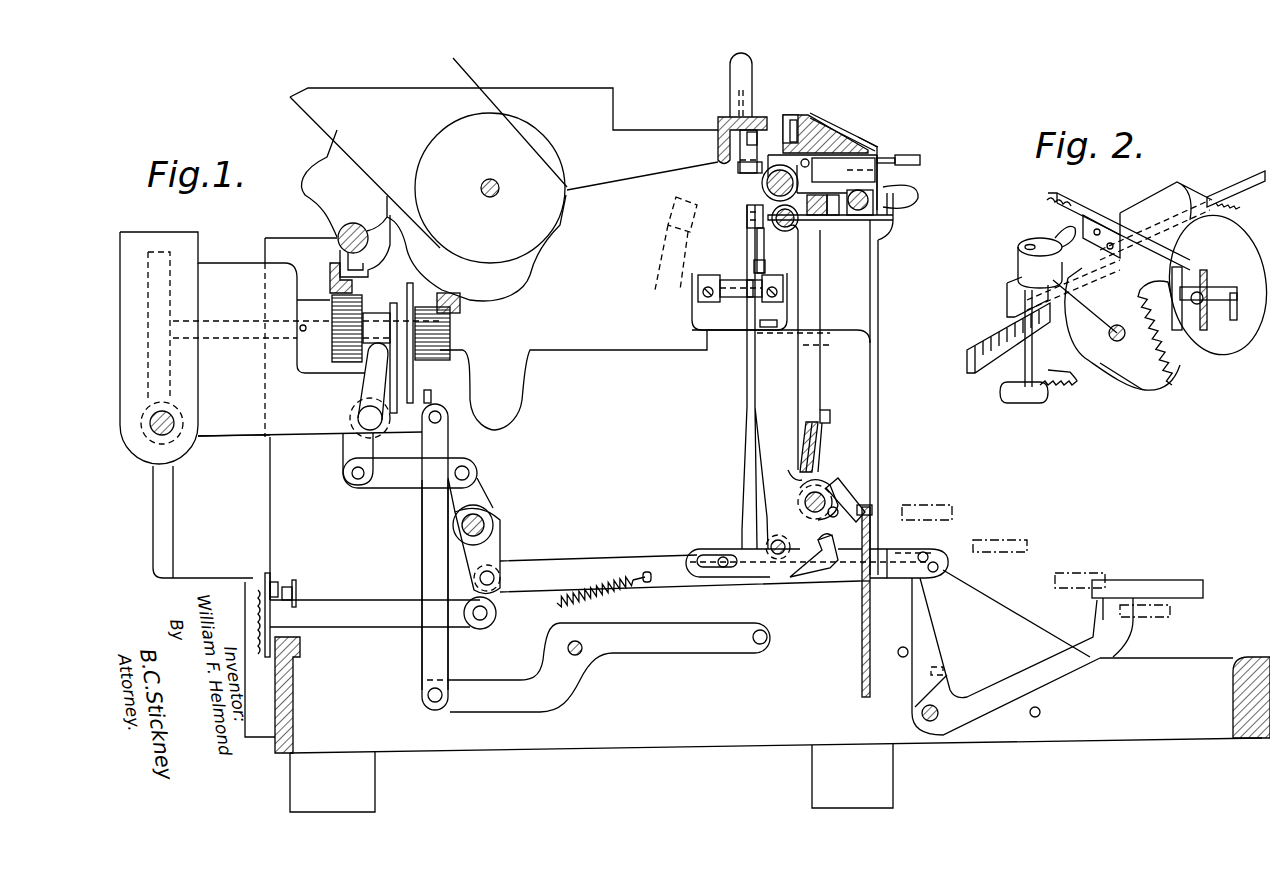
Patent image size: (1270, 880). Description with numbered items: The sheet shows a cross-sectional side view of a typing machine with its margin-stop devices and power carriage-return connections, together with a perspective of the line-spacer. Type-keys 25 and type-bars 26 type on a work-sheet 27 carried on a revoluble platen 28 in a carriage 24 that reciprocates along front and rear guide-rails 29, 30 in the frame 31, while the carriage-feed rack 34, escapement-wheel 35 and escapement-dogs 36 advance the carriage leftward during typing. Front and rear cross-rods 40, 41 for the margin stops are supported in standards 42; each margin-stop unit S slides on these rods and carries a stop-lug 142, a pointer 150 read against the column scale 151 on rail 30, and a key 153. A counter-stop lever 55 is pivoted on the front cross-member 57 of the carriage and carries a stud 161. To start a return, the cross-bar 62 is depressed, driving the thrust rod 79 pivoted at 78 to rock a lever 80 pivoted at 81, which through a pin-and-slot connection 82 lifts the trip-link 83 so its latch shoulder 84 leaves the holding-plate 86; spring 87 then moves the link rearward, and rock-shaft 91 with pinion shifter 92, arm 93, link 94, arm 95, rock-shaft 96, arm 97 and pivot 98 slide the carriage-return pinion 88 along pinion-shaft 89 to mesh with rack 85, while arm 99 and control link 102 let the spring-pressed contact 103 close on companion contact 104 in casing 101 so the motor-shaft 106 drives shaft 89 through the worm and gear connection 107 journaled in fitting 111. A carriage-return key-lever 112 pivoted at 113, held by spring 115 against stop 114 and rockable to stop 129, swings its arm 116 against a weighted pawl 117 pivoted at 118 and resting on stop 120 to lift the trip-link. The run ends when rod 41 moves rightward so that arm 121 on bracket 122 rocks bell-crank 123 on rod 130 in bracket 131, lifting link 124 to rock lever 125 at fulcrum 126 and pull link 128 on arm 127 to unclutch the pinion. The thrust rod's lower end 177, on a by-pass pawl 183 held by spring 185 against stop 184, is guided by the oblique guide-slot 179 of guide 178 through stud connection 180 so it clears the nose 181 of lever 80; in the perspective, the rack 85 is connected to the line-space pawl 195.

In FIG. 1, the carriage 24 is at (620, 182).
In FIG. 2, the carriage 24 is at (1133, 378).
In FIG. 1, the type-keys 25 is at (955, 512).
In FIG. 1, the type-bars 26 is at (665, 235).
In FIG. 1, the work-sheet 27 is at (483, 94).
In FIG. 1, the platen 28 is at (448, 135).
In FIG. 2, the platen 28 is at (1242, 340).
In FIG. 1, the front guide-rail 29 is at (805, 115).
In FIG. 1, the rear guide-rail 30 is at (353, 223).
In FIG. 1, the frame 31 is at (625, 350).
In FIG. 1, the carriage-feed rack 34 is at (460, 315).
In FIG. 1, the escapement-wheel 35 is at (407, 292).
In FIG. 1, the escapement-dogs 36 is at (431, 395).
In FIG. 1, the front cross-rod 40 is at (885, 222).
In FIG. 1, the rear cross-rod 41 is at (765, 178).
In FIG. 1, the standards 42 is at (879, 287).
In FIG. 1, the counter-stop lever 55 is at (740, 170).
In FIG. 1, the front cross-member 57 is at (722, 118).
In FIG. 1, the cross-bar 62 is at (820, 216).
In FIG. 1, the pivot 78 is at (792, 230).
In FIG. 1, the thrust rod 79 is at (821, 287).
In FIG. 1, the lever 80 is at (735, 553).
In FIG. 1, the pivot 81 is at (772, 542).
In FIG. 1, the pin-and-slot connection 82 is at (718, 575).
In FIG. 1, the carriage-return trip-link 83 is at (802, 583).
In FIG. 1, the latch shoulder 84 is at (873, 585).
In FIG. 1, the carriage rack 85 is at (330, 270).
In FIG. 2, the carriage rack 85 is at (978, 345).
In FIG. 1, the holding-plate 86 is at (862, 632).
In FIG. 1, the spring 87 is at (600, 592).
In FIG. 1, the carriage-return pinion 88 is at (340, 365).
In FIG. 1, the pinion-shaft 89 is at (265, 345).
In FIG. 1, the rock-shaft 91 is at (358, 418).
In FIG. 1, the pinion shifter 92 is at (364, 386).
In FIG. 1, the arm 93 is at (343, 458).
In FIG. 1, the link 94 is at (405, 488).
In FIG. 1, the arm 95 is at (478, 476).
In FIG. 1, the rock-shaft 96 is at (493, 524).
In FIG. 1, the arm 97 is at (500, 548).
In FIG. 1, the pivot 98 is at (496, 578).
In FIG. 1, the arm 99 is at (497, 613).
In FIG. 1, the casing 101 is at (293, 685).
In FIG. 1, the control link 102 is at (403, 630).
In FIG. 1, the spring-pressed contact 103 is at (297, 585).
In FIG. 1, the companion contact 104 is at (275, 582).
In FIG. 1, the motor-shaft 106 is at (172, 440).
In FIG. 1, the worm and gear connection 107 is at (172, 412).
In FIG. 1, the fitting 111 is at (256, 438).
In FIG. 1, the carriage-return key-lever 112 is at (1086, 625).
In FIG. 1, the pivot 113 is at (939, 713).
In FIG. 1, the stop 114 is at (900, 658).
In FIG. 1, the spring 115 is at (947, 672).
In FIG. 1, the arm 116 is at (933, 623).
In FIG. 1, the pawl 117 is at (944, 548).
In FIG. 1, the pivot 118 is at (923, 552).
In FIG. 1, the stop 120 is at (940, 567).
In FIG. 1, the arm 121 is at (747, 222).
In FIG. 1, the bracket 122 is at (764, 230).
In FIG. 1, the bell-crank 123 is at (755, 268).
In FIG. 1, the link 124 is at (747, 372).
In FIG. 1, the lever 125 is at (690, 653).
In FIG. 1, the fulcrum 126 is at (566, 648).
In FIG. 1, the arm 127 is at (420, 440).
In FIG. 1, the link 128 is at (422, 570).
In FIG. 1, the stop 129 is at (1041, 710).
In FIG. 1, the rod 130 is at (738, 297).
In FIG. 1, the bracket 131 is at (692, 322).
In FIG. 1, the stop-lug 142 is at (762, 186).
In FIG. 1, the pointer 150 is at (870, 140).
In FIG. 1, the letter-space or column scale 151 is at (840, 130).
In FIG. 1, the key 153 is at (915, 155).
In FIG. 1, the stud 161 is at (763, 130).
In FIG. 1, the lower end 177 is at (817, 558).
In FIG. 1, the guide 178 is at (840, 490).
In FIG. 1, the guide-slot 179 is at (835, 495).
In FIG. 1, the stud connection 180 is at (803, 498).
In FIG. 1, the nose 181 is at (812, 538).
In FIG. 1, the by-pass pawl 183 is at (825, 463).
In FIG. 1, the stop 184 is at (788, 470).
In FIG. 1, the spring 185 is at (806, 438).
In FIG. 2, the line-space pawl 195 is at (1138, 295).
In FIG. 1, the margin-stop unit S is at (877, 191).